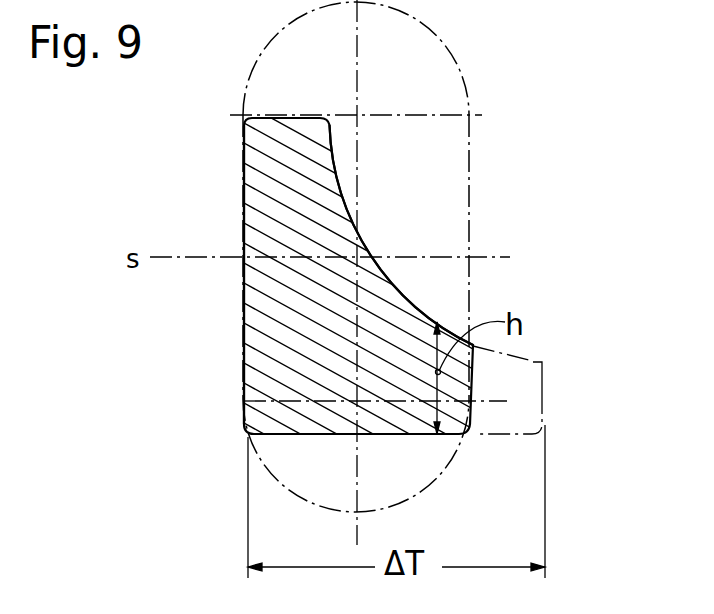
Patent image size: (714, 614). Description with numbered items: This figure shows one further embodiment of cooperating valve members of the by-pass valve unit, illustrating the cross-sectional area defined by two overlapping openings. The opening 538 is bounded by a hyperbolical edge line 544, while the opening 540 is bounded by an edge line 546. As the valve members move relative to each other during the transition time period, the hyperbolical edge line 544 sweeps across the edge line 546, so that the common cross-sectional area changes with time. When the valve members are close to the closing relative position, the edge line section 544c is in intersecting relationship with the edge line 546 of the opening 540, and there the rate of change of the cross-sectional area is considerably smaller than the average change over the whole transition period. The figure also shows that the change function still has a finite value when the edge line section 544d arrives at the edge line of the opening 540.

The opening 540 is at (457, 60).
The opening 538 is at (410, 300).
The hyperbolical edge line 544 is at (365, 239).
The edge line 546 is at (244, 193).
The edge line section 544c is at (533, 362).
The edge line section 544d is at (544, 384).